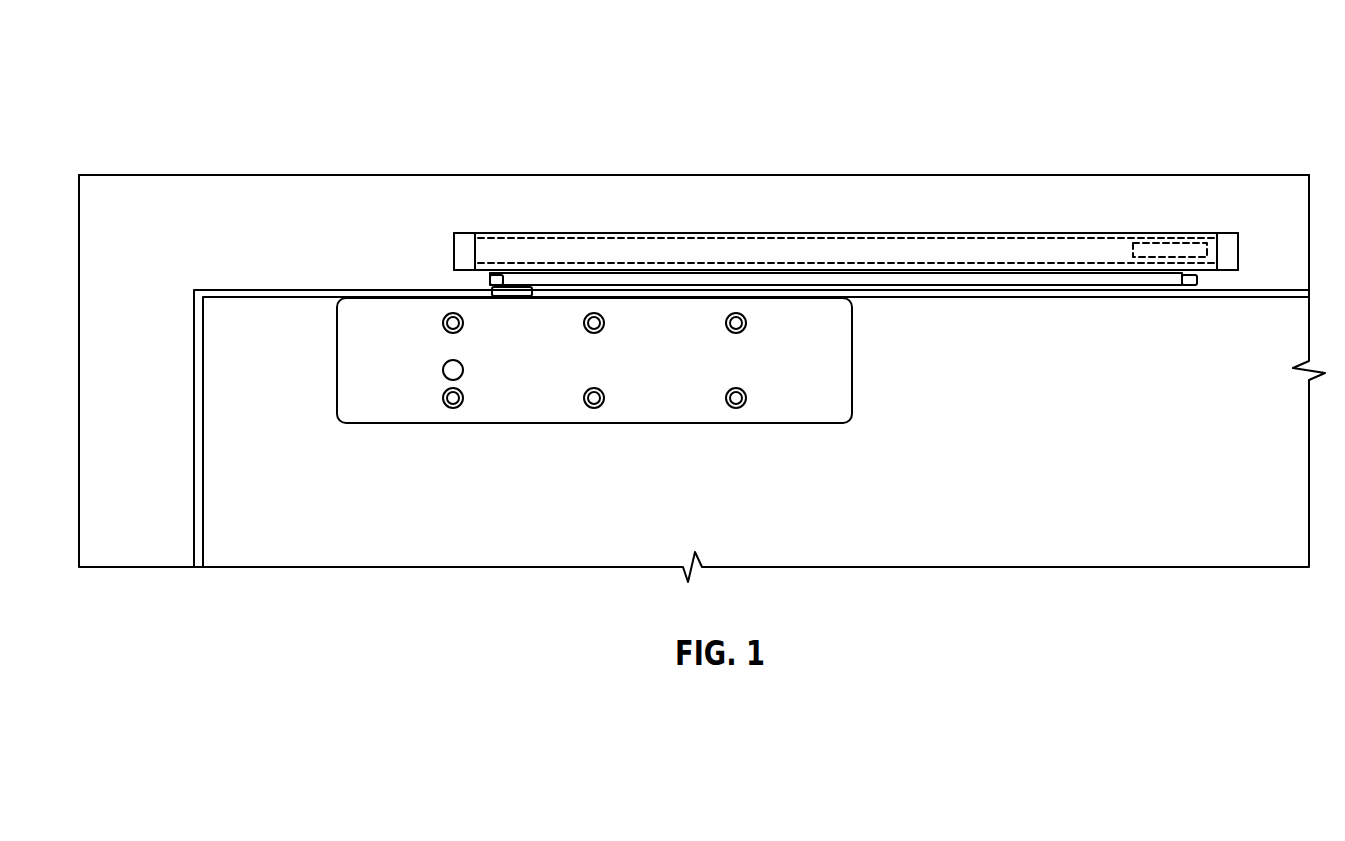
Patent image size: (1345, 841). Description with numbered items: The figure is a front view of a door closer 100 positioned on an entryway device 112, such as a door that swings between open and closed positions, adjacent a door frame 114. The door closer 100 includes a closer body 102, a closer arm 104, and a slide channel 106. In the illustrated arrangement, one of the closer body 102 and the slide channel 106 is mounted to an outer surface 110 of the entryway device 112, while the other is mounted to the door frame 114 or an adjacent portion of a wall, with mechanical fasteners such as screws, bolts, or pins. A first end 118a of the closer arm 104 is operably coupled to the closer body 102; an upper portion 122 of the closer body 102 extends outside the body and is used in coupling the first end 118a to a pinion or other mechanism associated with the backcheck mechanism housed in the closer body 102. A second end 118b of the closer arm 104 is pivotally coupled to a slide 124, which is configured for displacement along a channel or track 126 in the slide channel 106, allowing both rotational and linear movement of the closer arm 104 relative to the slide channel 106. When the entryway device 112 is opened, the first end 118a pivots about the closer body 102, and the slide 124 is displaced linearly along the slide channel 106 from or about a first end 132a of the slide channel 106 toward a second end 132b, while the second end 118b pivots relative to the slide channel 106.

The door closer 100 is at (1030, 205).
The closer body 102 is at (818, 403).
The closer arm 104 is at (1001, 280).
The slide channel 106 is at (875, 235).
The outer surface 110 is at (247, 327).
The entryway device 112 is at (306, 546).
The door frame 114 is at (738, 192).
The first end of the closer arm 118a is at (510, 283).
The second end of the closer arm 118b is at (1175, 280).
The upper portion of the closer body 122 is at (512, 292).
The slide 124 is at (1150, 252).
The channel or track 126 is at (603, 250).
The first end of the slide channel 132a is at (1213, 250).
The second end of the slide channel 132b is at (495, 250).